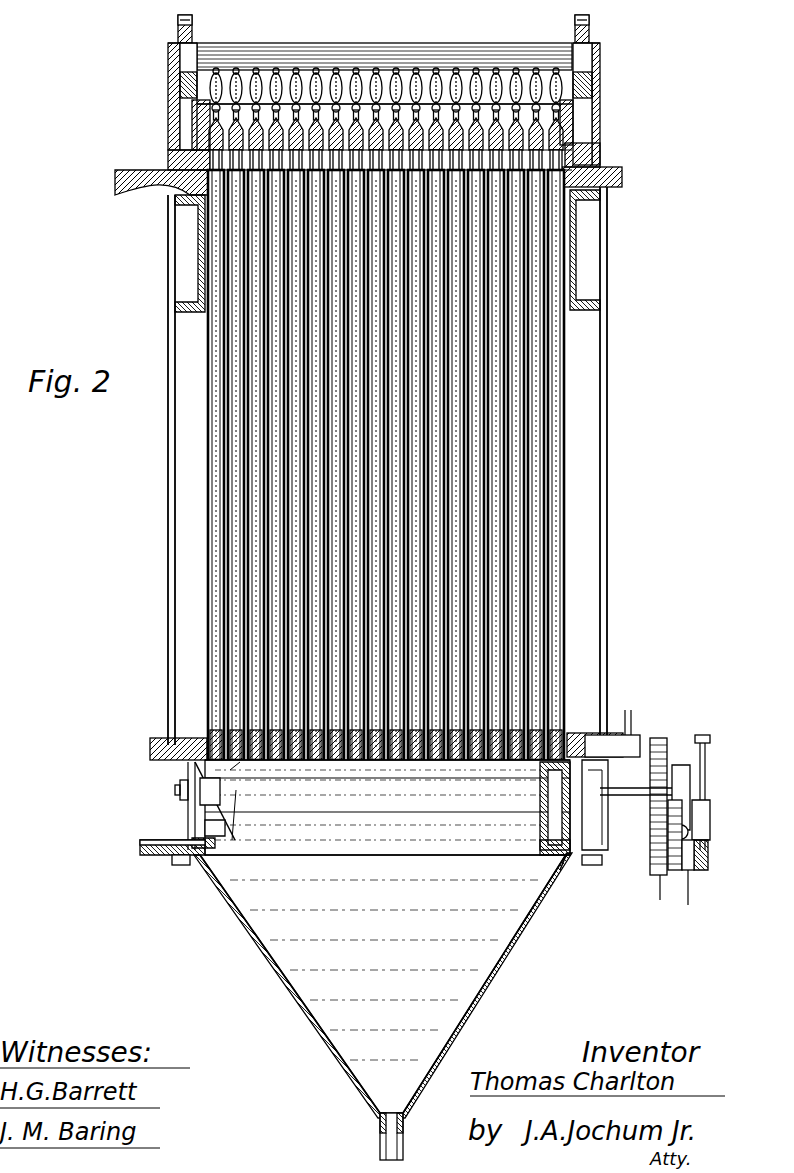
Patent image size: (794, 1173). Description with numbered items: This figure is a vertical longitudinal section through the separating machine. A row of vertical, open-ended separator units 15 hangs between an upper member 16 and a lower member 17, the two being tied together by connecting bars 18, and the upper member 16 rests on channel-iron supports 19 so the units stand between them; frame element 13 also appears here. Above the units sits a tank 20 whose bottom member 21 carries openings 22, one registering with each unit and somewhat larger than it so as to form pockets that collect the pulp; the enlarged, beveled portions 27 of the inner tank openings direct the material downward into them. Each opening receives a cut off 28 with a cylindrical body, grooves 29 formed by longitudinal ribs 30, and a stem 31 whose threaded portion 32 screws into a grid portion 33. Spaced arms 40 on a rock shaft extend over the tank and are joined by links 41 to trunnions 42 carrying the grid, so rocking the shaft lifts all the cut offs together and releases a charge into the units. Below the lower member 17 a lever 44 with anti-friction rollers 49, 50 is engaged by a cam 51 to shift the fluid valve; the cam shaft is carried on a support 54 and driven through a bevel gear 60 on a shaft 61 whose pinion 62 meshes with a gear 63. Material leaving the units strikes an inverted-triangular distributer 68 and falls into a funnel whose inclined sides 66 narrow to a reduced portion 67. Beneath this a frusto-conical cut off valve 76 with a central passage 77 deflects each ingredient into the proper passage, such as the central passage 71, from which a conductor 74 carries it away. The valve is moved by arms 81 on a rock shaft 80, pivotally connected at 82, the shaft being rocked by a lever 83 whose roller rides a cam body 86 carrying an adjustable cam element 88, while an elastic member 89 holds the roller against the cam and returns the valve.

The cleaning frame 13 is at (653, 100).
The separator units 15 is at (520, 420).
The upper member 16 is at (620, 170).
The lower member 17 is at (152, 742).
The connecting bars 18 is at (168, 242).
The supports 19 is at (200, 268).
The tank 20 is at (200, 118).
The bottom member 21 is at (200, 160).
The openings 22 is at (115, 182).
The enlarged portions 27 is at (240, 140).
The cut off 28 is at (168, 205).
The grooves 29 is at (208, 128).
The longitudinal ribs 30 is at (416, 72).
The stem 31 is at (345, 75).
The threaded portion 32 is at (402, 70).
The grid portion 33 is at (302, 85).
The arms 40 is at (190, 35).
The links 41 is at (180, 60).
The trunnions 42 is at (185, 88).
The lever 44 is at (702, 732).
The anti-friction roller 49 is at (706, 745).
The anti-friction roller 50 is at (700, 835).
The cam 51 is at (700, 790).
The support 54 is at (152, 858).
The bevel gear 60 is at (188, 770).
The shaft 61 is at (595, 865).
The pinion 62 is at (655, 738).
The gear 63 is at (660, 875).
The inclined sides 66 is at (235, 790).
The reduced portion 67 is at (335, 820).
The distributer 68 is at (345, 815).
The central passage 71 is at (480, 952).
The conductor 74 is at (403, 1140).
The cut off valve 76 is at (562, 865).
The central passage 77 is at (545, 855).
The rock shaft 80 is at (380, 806).
The arms 81 is at (228, 810).
The pivotal connections 82 is at (200, 832).
The lever 83 is at (685, 828).
The cam body 86 is at (662, 878).
The cam element 88 is at (688, 872).
The elastic member 89 is at (688, 860).